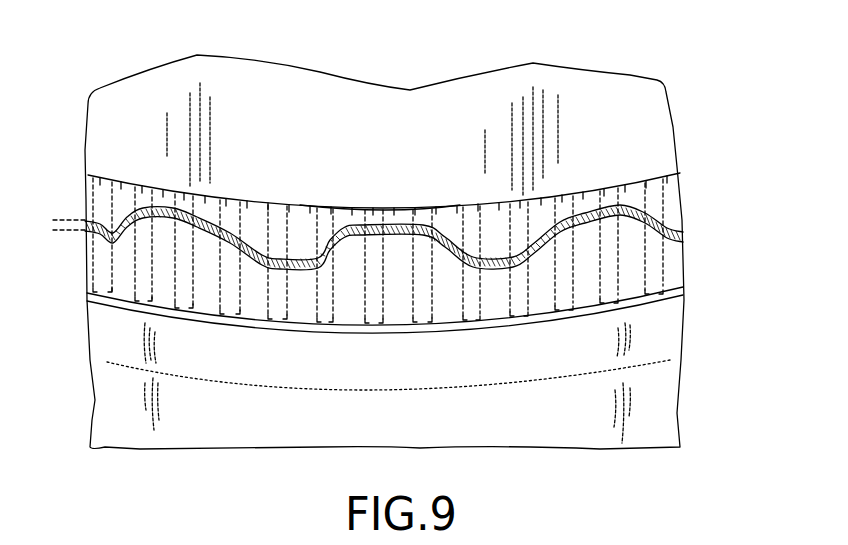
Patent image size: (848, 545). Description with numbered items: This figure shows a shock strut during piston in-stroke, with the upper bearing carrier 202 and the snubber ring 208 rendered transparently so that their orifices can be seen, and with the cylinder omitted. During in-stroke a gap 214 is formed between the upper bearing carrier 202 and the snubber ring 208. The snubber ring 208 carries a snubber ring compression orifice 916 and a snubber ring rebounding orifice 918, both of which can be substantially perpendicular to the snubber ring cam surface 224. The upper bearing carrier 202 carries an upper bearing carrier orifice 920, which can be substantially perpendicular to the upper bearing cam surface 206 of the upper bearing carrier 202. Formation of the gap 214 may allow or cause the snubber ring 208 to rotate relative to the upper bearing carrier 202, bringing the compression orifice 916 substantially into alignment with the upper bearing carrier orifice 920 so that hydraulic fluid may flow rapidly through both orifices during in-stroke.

The upper bearing carrier 202 is at (684, 194).
The upper bearing cam surface 206 is at (384, 231).
The snubber ring 208 is at (424, 301).
The gap 214 is at (62, 233).
The snubber ring cam surface 224 is at (120, 243).
The snubber ring compression orifice 916 is at (380, 305).
The snubber ring rebounding orifice 918 is at (350, 305).
The upper bearing carrier orifice 920 is at (375, 195).